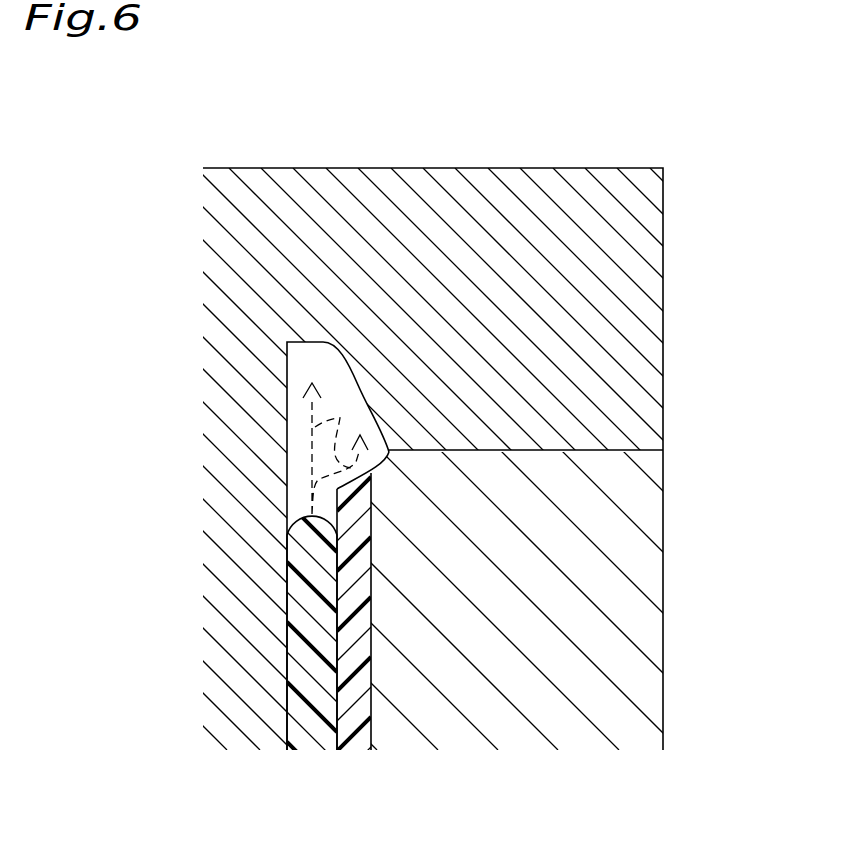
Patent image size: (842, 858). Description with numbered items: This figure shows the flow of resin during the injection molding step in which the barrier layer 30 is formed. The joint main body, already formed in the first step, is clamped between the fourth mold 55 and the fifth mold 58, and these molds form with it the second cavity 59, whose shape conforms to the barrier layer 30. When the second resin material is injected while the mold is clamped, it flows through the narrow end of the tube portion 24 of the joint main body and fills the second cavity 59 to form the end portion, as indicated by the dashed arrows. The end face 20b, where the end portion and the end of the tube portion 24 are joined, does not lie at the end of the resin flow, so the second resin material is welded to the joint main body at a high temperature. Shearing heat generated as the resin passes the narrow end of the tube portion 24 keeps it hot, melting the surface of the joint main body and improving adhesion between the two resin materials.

The fourth mold 55 is at (548, 168).
The fifth mold 58 is at (217, 712).
The second cavity 59 is at (325, 362).
The end face 20b is at (390, 454).
The tube portion 24 is at (353, 730).
The barrier layer 30 is at (290, 738).